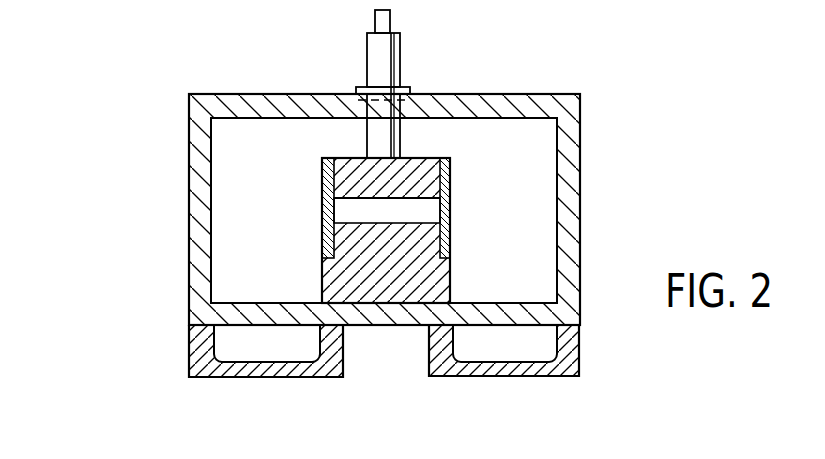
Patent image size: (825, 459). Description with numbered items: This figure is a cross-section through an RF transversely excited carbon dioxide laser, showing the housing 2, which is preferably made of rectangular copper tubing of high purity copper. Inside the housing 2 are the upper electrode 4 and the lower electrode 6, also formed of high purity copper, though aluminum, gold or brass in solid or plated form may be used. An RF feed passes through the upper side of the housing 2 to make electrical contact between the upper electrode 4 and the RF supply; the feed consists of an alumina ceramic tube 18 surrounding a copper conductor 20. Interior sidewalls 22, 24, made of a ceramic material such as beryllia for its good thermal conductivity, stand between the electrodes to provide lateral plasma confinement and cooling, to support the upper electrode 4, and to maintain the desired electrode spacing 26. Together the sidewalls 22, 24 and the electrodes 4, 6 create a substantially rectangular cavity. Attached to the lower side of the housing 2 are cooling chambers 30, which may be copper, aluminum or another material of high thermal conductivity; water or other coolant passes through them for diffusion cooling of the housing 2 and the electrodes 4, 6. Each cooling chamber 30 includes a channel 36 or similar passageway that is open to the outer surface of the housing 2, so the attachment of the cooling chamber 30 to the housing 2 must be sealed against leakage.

The housing 2 is at (548, 94).
The upper electrode 4 is at (423, 167).
The lower electrode 6 is at (423, 277).
The alumina ceramic tube 18 is at (400, 60).
The copper conductor 20 is at (390, 22).
The interior sidewall 22 is at (450, 205).
The interior sidewall 24 is at (336, 197).
The electrode spacing 26 is at (352, 212).
The cooling chamber 30 is at (430, 350).
The channel 36 is at (227, 343).